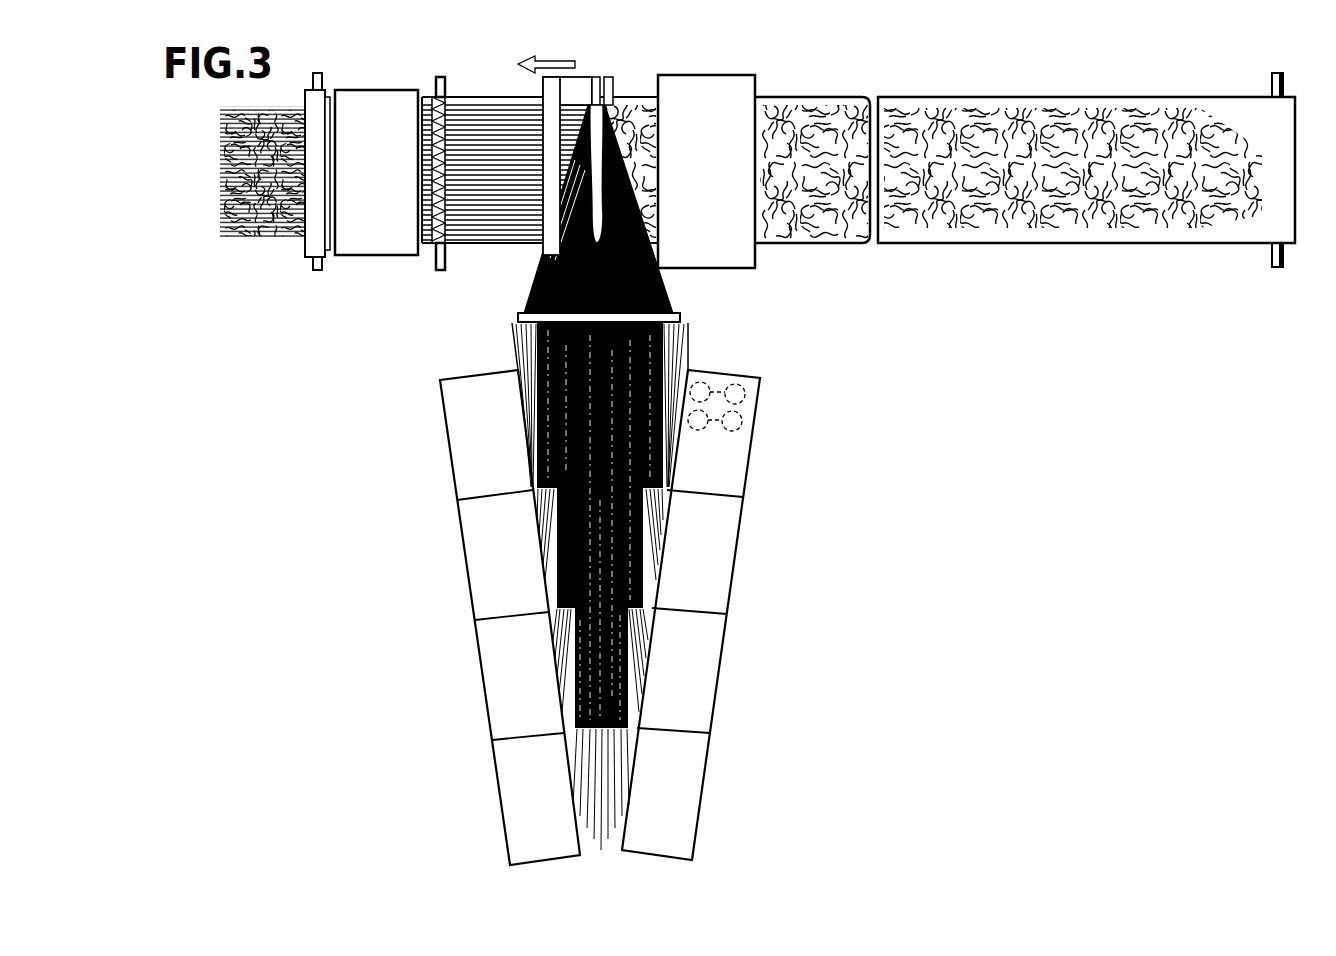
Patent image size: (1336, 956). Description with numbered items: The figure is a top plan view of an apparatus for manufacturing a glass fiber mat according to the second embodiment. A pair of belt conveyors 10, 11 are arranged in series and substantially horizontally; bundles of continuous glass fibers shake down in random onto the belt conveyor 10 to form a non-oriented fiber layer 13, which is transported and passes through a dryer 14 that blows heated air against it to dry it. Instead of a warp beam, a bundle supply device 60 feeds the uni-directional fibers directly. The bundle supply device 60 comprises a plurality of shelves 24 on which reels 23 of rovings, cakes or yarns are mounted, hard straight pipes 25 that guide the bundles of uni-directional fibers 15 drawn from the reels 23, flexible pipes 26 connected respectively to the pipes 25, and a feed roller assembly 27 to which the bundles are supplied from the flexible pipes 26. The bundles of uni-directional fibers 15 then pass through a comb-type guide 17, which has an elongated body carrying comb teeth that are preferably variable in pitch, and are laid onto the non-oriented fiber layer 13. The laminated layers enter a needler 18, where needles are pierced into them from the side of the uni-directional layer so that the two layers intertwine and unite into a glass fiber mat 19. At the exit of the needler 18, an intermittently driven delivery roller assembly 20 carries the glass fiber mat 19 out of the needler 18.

The belt conveyor 10 is at (1067, 237).
The belt conveyor 11 is at (494, 247).
The non-oriented fiber layer 13 is at (975, 222).
The dryer 14 is at (755, 266).
The bundles of uni-directional glass fibers 15 is at (481, 118).
The comb-type guide 17 is at (448, 220).
The needler 18 is at (375, 102).
The glass fiber mat 19 is at (242, 235).
The delivery roller assembly 20 is at (306, 248).
The reels 23 is at (742, 413).
The shelves 24 is at (727, 593).
The hard straight pipes 25 is at (645, 533).
The flexible pipes 26 is at (667, 288).
The feed roller assembly 27 is at (582, 73).
The bundle supply device 60 is at (570, 594).